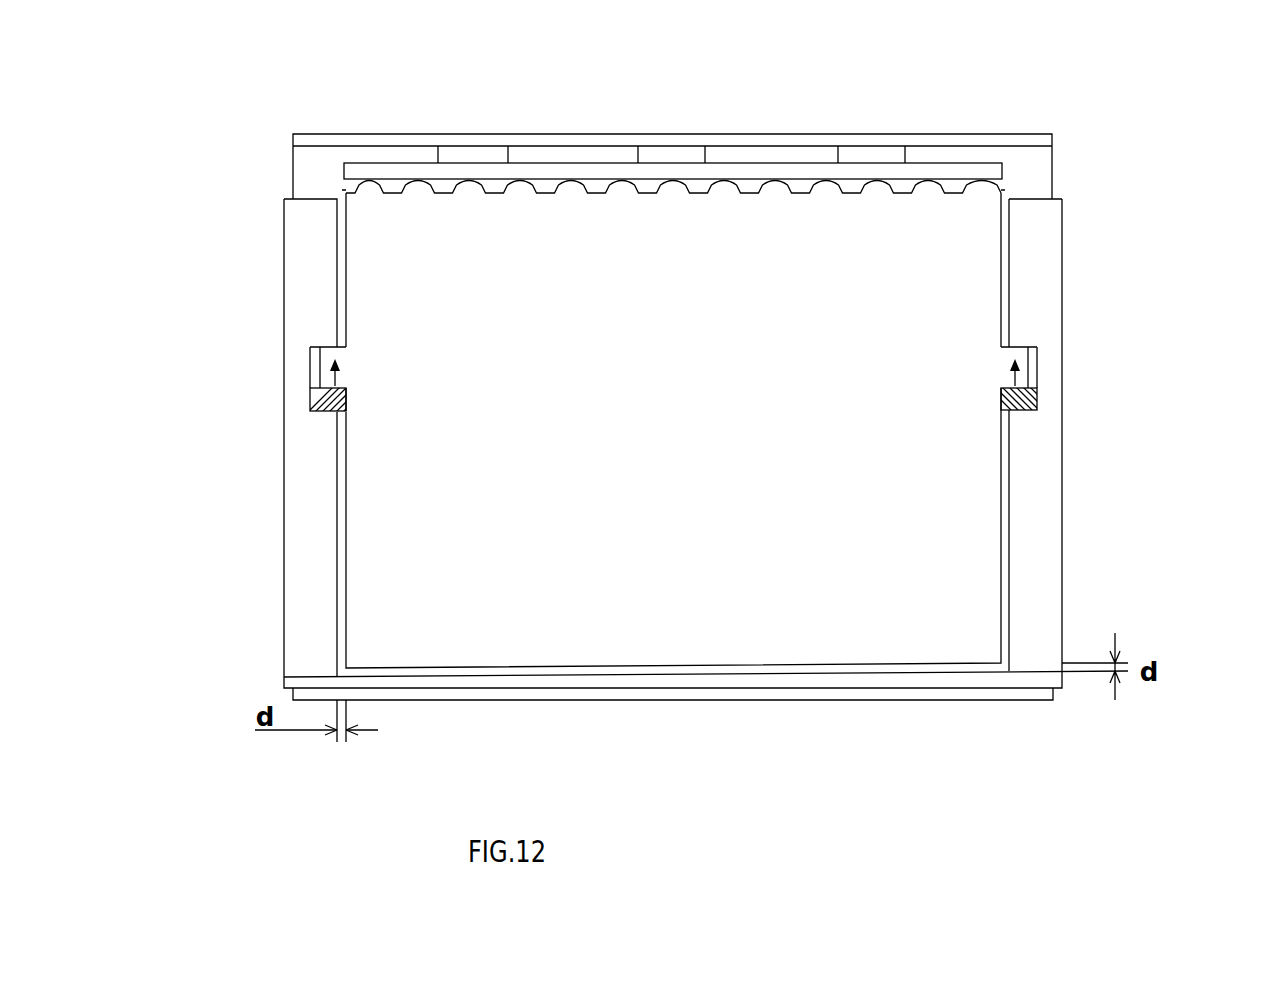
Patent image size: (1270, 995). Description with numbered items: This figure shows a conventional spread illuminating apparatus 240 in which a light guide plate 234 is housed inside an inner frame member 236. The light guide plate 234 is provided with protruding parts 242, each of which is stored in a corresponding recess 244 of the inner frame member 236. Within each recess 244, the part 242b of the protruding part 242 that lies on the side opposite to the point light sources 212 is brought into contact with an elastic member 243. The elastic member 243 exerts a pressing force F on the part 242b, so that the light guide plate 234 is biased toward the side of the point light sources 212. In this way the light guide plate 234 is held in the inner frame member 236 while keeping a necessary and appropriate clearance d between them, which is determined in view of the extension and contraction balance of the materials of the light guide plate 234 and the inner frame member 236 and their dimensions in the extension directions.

The point light sources 212 is at (488, 152).
The light guide plate 234 is at (976, 546).
The inner frame member 236 is at (1048, 248).
The spread illuminating apparatus 240 is at (689, 742).
The protruding part 242 is at (312, 354).
The part of the protruding part 242b is at (352, 388).
The elastic member 243 is at (310, 400).
The recess 244 is at (318, 374).